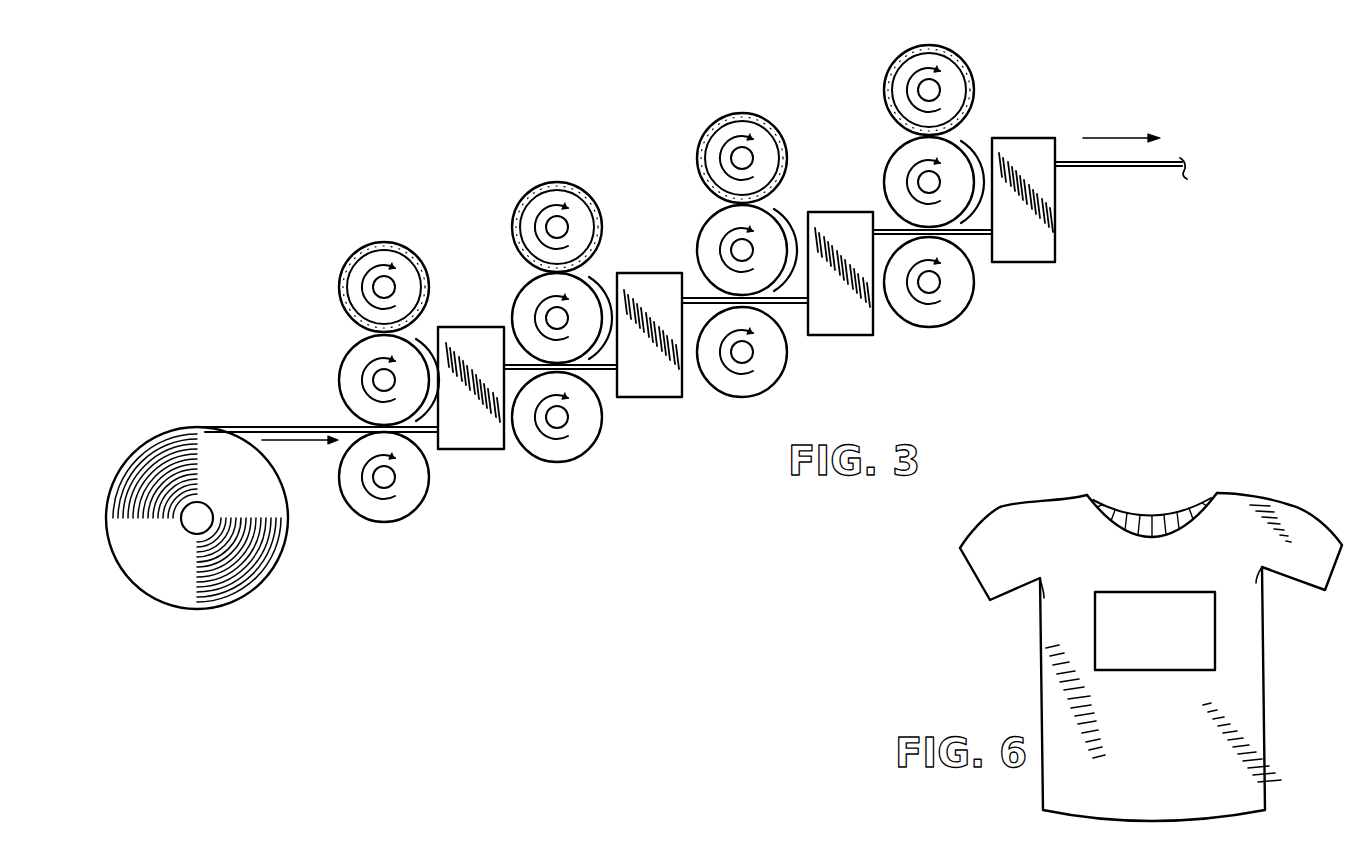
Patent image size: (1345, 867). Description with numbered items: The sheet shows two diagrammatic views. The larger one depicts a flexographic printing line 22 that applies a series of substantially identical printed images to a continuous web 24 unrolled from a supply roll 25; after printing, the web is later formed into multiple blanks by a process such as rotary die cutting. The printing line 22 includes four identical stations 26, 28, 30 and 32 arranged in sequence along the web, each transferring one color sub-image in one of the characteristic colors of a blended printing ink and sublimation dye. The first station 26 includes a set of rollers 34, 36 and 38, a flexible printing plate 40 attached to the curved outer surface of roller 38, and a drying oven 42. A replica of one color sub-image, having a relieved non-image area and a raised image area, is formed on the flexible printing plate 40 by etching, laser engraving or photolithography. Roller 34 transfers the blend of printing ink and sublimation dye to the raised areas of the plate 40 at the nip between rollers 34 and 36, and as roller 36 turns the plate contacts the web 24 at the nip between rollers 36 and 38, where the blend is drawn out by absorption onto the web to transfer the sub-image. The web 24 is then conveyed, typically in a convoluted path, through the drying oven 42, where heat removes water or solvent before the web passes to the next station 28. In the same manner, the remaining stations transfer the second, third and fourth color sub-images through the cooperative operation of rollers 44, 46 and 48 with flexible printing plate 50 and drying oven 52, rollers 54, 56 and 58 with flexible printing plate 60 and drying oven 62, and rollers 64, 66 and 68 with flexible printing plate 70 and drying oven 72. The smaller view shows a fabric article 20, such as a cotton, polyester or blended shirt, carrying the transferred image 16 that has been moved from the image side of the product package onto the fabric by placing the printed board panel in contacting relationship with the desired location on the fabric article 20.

In FIG. 6, the transferred image 16 is at (1208, 592).
In FIG. 6, the fabric article 20 is at (1288, 498).
In FIG. 3, the flexographic printing line 22 is at (389, 91).
In FIG. 3, the continuous web 24 is at (268, 426).
In FIG. 3, the supply roll 25 is at (272, 576).
In FIG. 3, the station 26 is at (360, 225).
In FIG. 3, the station 28 is at (542, 151).
In FIG. 3, the station 30 is at (730, 89).
In FIG. 3, the station 32 is at (977, 50).
In FIG. 3, the roller 34 is at (354, 268).
In FIG. 3, the roller 36 is at (346, 375).
In FIG. 3, the roller 38 is at (422, 504).
In FIG. 3, the flexible printing plate 40 is at (418, 332).
In FIG. 3, the drying oven 42 is at (474, 444).
In FIG. 3, the roller 44 is at (531, 201).
In FIG. 3, the roller 46 is at (521, 303).
In FIG. 3, the roller 48 is at (574, 444).
In FIG. 3, the flexible printing plate 50 is at (594, 277).
In FIG. 3, the drying oven 52 is at (670, 389).
In FIG. 3, the roller 54 is at (728, 136).
In FIG. 3, the roller 56 is at (711, 237).
In FIG. 3, the roller 58 is at (770, 380).
In FIG. 3, the flexible printing plate 60 is at (778, 213).
In FIG. 3, the drying oven 62 is at (858, 324).
In FIG. 3, the roller 64 is at (905, 73).
In FIG. 3, the roller 66 is at (900, 169).
In FIG. 3, the roller 68 is at (950, 304).
In FIG. 3, the flexible printing plate 70 is at (962, 140).
In FIG. 3, the drying oven 72 is at (1036, 256).